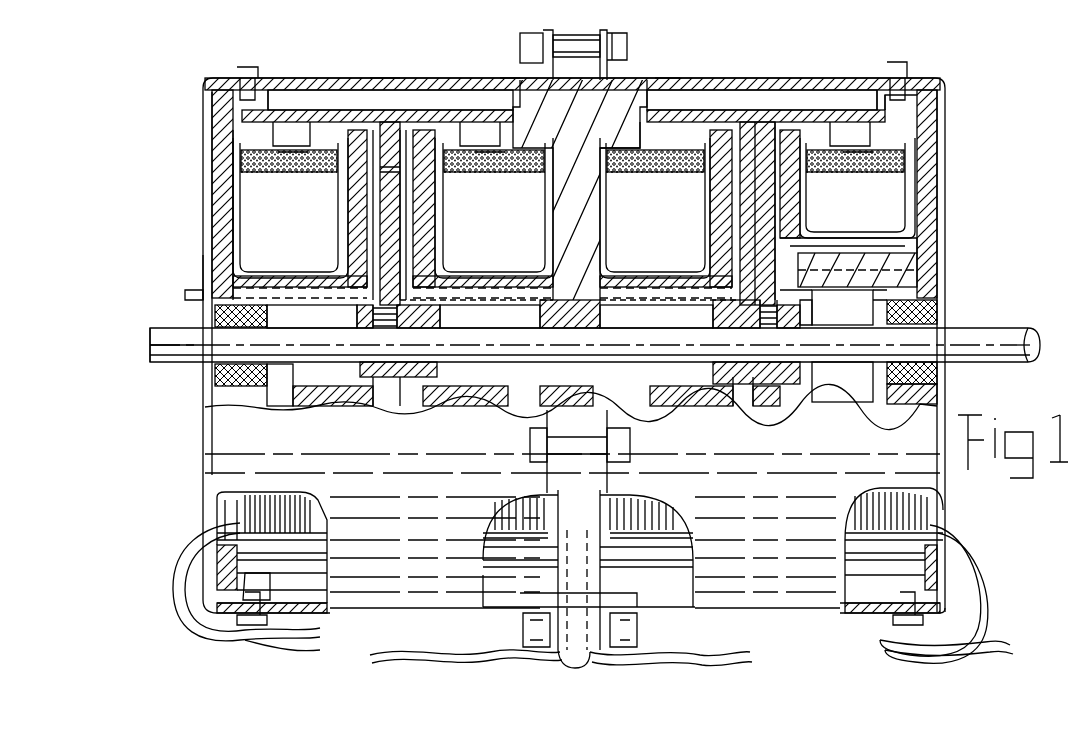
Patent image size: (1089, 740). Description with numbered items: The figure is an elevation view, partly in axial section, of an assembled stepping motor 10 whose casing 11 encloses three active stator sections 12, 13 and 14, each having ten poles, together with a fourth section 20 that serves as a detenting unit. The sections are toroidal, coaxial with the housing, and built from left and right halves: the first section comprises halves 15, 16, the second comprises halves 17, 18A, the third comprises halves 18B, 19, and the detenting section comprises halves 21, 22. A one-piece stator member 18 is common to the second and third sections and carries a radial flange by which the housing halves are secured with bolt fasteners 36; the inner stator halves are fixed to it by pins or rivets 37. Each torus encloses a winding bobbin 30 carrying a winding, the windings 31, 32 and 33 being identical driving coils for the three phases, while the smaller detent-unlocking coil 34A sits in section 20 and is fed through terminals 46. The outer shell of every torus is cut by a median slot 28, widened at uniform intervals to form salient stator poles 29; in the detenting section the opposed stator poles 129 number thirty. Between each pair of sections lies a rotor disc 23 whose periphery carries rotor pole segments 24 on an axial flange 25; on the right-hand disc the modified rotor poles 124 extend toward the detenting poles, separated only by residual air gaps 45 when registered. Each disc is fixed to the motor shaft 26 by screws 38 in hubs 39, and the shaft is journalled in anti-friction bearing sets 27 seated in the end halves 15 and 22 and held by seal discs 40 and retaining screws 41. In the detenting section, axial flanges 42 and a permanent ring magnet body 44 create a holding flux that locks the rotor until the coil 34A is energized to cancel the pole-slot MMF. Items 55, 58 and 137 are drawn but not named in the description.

The stepping motor 10 is at (383, 52).
The casing 11 is at (748, 128).
The first active stator section 12 is at (326, 79).
The rotor poles 124 is at (850, 108).
The segmental stator poles 129 is at (817, 130).
The second active stator section 13 is at (508, 80).
The third active stator section 14 is at (664, 68).
The left half of first stator section 15 is at (235, 175).
The right half of first stator section 16 is at (360, 252).
The left half of second stator section 17 is at (432, 200).
The stator member 18 is at (602, 318).
The right half of second stator section 18A is at (575, 245).
The left half of third stator section 18B is at (600, 250).
The right half of third stator section 19 is at (725, 190).
The fourth stator section 20 is at (866, 68).
The left half of detenting section 21 is at (790, 188).
The right half of detenting section 22 is at (920, 190).
The rotor disc 23 is at (400, 412).
The rotor pole segments 24 is at (432, 118).
The axial flange 25 is at (385, 168).
The motor shaft 26 is at (195, 365).
The anti-friction bearing sets 27 is at (215, 315).
The median slot 28 is at (650, 66).
The salient stator poles 29 is at (700, 62).
The winding bobbin 30 is at (245, 180).
The winding 31 is at (294, 226).
The winding 32 is at (498, 226).
The winding 33 is at (660, 226).
The detent-unlocking coil 34A is at (873, 226).
The bolt fasteners 36 is at (262, 50).
The pins or rivets 37 is at (516, 309).
The screws 38 is at (760, 320).
The hubs 39 is at (450, 408).
The seal discs 40 is at (203, 265).
The retaining screws 41 is at (192, 292).
The axial flanges 42 is at (905, 255).
The permanent ring magnet body 44 is at (833, 307).
The residual air gaps 45 is at (428, 118).
The terminals 46 is at (880, 640).
The bolt 55 is at (608, 52).
The threaded stud 58 is at (385, 322).
The hub 137 is at (850, 336).